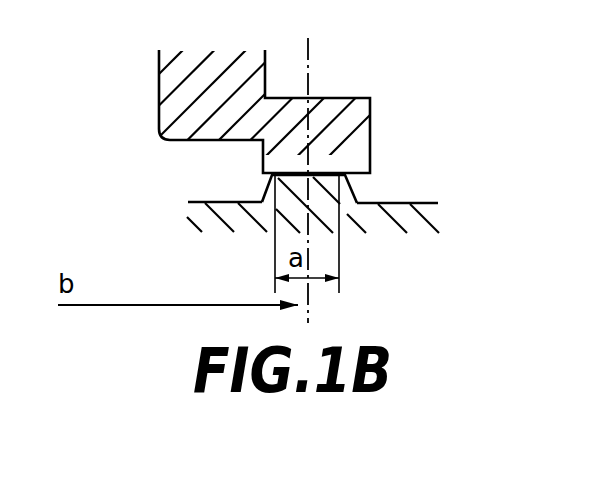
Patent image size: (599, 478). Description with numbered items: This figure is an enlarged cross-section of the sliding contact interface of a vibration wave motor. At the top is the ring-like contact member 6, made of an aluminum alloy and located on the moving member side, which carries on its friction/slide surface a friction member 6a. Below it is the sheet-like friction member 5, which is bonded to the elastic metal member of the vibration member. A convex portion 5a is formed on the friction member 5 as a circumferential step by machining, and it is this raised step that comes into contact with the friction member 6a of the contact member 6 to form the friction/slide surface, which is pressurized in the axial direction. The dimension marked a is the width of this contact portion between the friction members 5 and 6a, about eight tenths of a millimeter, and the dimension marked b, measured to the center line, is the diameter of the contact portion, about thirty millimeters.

The friction member 5 is at (420, 220).
The convex portion 5a is at (267, 192).
The contact member 6 is at (324, 121).
The friction member 6a is at (362, 165).